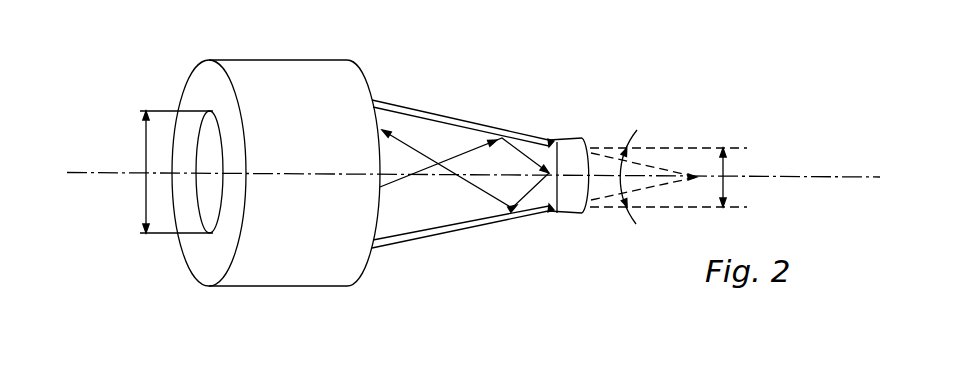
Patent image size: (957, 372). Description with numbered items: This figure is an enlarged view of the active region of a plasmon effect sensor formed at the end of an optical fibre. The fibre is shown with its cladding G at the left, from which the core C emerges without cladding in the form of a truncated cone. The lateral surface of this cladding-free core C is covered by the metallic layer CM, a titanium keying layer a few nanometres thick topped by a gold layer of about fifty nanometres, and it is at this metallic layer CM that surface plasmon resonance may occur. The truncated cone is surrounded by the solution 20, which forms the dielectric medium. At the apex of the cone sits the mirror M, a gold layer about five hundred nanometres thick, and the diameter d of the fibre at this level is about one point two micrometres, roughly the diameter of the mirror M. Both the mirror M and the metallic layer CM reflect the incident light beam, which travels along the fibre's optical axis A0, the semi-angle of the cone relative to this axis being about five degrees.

The optical axis A0 is at (92, 163).
The cladding G is at (278, 50).
The solution 20 is at (426, 86).
The core C is at (503, 152).
The metallic layer CM is at (461, 246).
The mirror M is at (570, 176).
The diameter d is at (732, 177).